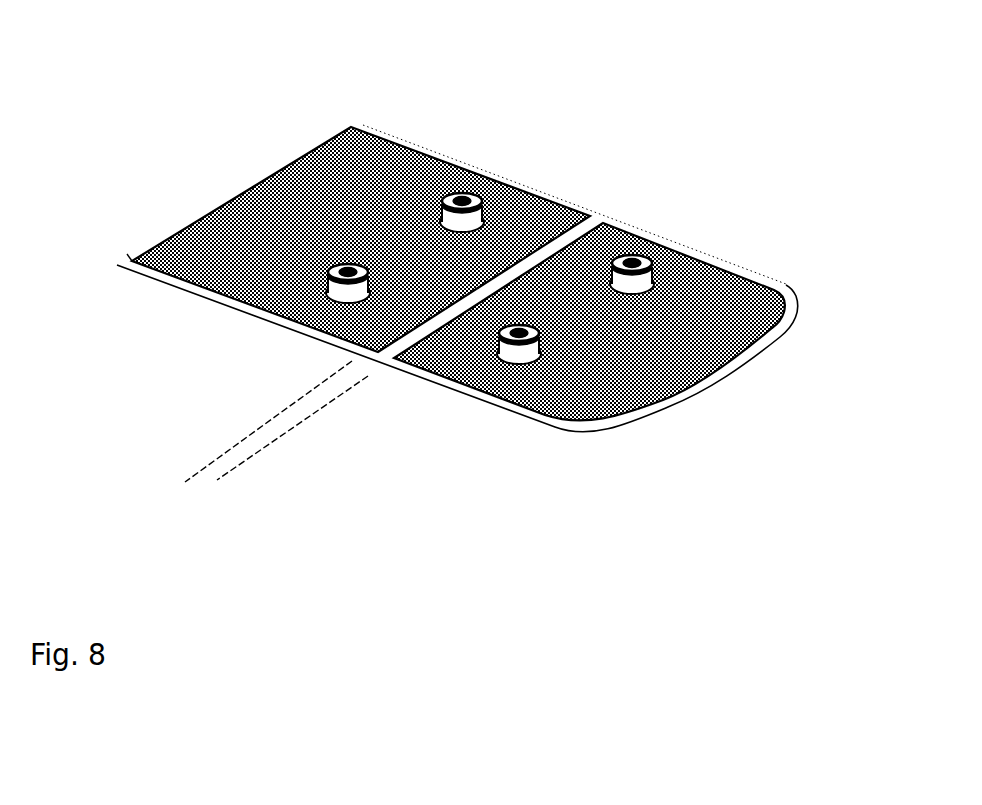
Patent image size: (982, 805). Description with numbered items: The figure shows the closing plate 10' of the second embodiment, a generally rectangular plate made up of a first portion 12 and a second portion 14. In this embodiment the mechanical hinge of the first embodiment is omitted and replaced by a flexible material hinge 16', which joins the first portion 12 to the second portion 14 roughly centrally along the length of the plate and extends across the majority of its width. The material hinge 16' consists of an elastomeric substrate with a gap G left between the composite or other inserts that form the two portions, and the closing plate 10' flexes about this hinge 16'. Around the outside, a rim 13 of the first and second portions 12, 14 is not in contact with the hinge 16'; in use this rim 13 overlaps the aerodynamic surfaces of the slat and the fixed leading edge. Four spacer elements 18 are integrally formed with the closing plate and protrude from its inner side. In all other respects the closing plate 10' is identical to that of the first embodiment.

The closing plate 10' is at (482, 249).
The first portion 12 is at (640, 328).
The rim 13 is at (790, 288).
The second portion 14 is at (285, 225).
The flexible material hinge 16' is at (324, 397).
The spacer elements 18 is at (612, 252).
The gap G is at (370, 457).